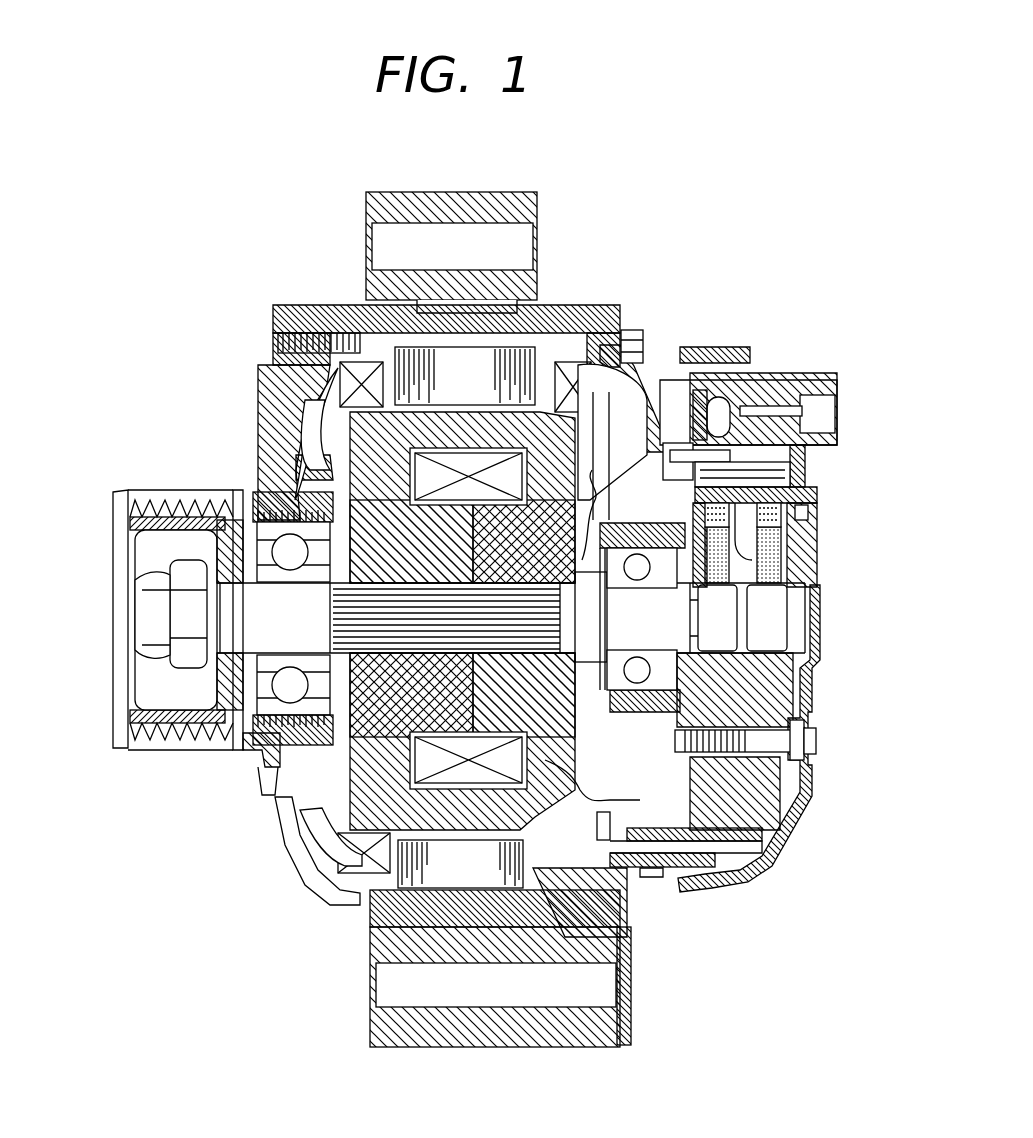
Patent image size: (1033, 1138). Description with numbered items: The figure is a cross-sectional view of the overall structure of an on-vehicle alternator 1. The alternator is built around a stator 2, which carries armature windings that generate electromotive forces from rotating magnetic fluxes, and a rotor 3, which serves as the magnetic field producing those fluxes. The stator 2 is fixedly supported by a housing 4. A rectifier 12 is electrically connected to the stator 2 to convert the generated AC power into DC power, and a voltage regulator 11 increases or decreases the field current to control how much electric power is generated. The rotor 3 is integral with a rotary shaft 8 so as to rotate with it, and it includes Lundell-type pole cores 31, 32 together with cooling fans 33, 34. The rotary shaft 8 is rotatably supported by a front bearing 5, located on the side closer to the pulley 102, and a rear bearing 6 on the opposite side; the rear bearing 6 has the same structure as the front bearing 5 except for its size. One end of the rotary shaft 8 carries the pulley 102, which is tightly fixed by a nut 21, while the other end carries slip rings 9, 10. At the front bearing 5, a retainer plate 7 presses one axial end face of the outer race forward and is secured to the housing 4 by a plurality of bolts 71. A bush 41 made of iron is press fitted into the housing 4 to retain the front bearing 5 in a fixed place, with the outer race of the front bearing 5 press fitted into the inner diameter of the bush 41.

The on-vehicle alternator 1 is at (661, 168).
The stator 2 is at (515, 365).
The rotor 3 is at (419, 652).
The housing 4 is at (272, 398).
The front bearing 5 is at (262, 720).
The rear bearing 6 is at (790, 700).
The retainer plate 7 is at (270, 475).
The bolts 71 is at (282, 455).
The rotary shaft 8 is at (236, 740).
The slip ring 9 is at (720, 628).
The slip ring 10 is at (775, 602).
The voltage regulator 11 is at (820, 340).
The rectifier 12 is at (788, 800).
The nut 21 is at (165, 572).
The pole core 31 is at (380, 800).
The pole core 32 is at (645, 333).
The cooling fan 33 is at (333, 798).
The cooling fan 34 is at (690, 792).
The bush 41 is at (262, 790).
The pulley 102 is at (118, 708).